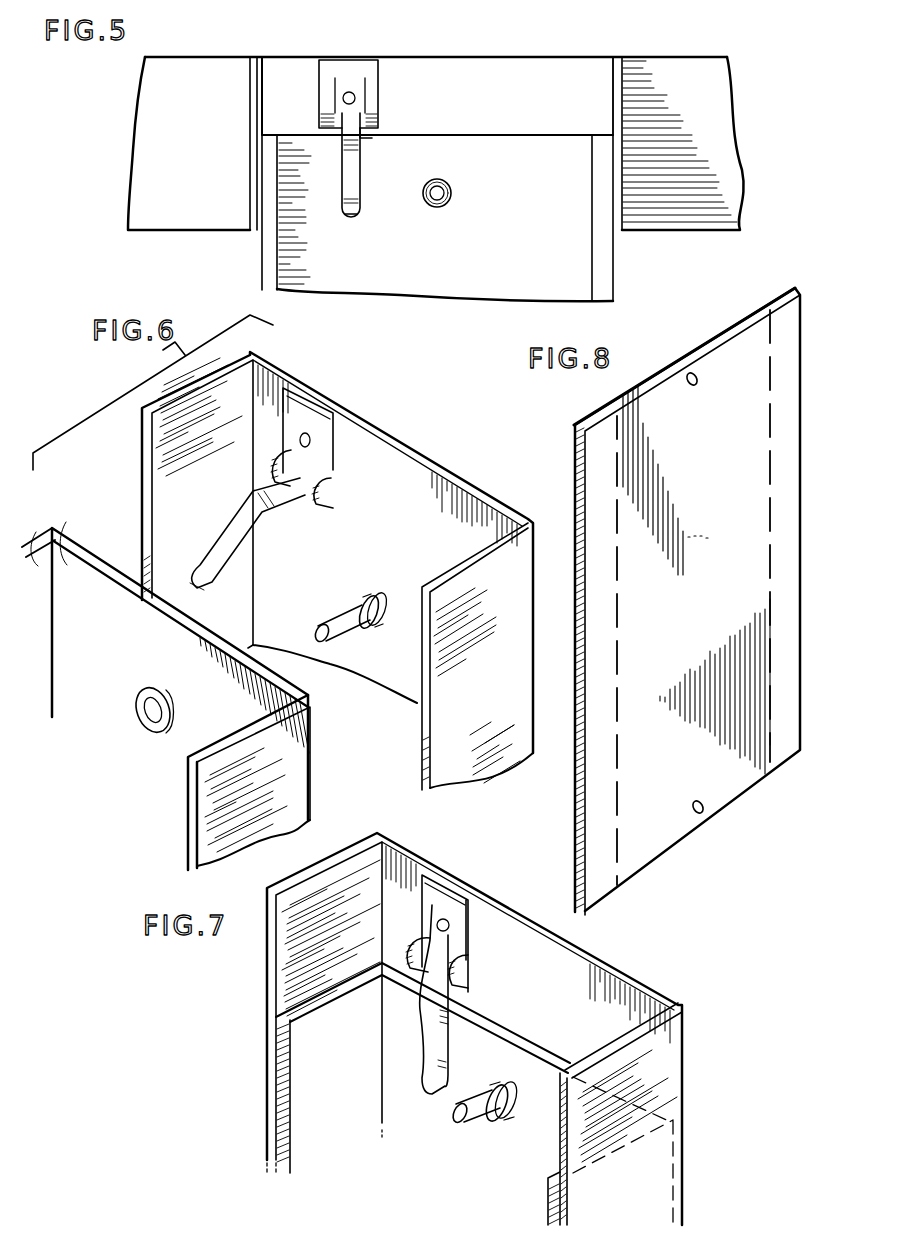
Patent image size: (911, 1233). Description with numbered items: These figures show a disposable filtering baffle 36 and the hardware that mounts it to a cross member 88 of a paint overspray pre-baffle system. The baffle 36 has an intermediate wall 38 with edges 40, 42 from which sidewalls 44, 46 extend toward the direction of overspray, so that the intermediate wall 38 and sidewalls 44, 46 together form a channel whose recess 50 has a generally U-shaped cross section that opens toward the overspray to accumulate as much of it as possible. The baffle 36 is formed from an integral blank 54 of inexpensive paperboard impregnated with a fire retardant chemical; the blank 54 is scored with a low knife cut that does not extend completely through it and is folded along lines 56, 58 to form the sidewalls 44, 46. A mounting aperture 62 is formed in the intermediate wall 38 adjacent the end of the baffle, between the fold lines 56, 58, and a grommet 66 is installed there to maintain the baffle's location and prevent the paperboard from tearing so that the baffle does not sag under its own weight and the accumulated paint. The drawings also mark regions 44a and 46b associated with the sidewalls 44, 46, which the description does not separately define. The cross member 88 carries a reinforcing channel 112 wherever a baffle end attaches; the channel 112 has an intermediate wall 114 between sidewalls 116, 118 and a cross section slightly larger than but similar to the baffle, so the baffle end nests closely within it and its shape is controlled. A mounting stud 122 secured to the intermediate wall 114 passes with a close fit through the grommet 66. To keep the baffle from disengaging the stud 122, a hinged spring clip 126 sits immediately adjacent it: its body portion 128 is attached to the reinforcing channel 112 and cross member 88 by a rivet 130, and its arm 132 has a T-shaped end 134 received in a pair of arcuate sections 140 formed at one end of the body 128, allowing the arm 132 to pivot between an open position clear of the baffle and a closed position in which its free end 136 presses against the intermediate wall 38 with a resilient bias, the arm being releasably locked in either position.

In FIG. 5, the disposable filtering baffle 36 is at (390, 300).
In FIG. 6, the disposable filtering baffle 36 is at (310, 808).
In FIG. 7, the disposable filtering baffle 36 is at (268, 1097).
In FIG. 5, the intermediate wall 38 is at (462, 136).
In FIG. 6, the intermediate wall 38 is at (102, 603).
In FIG. 8, the intermediate wall 38 is at (738, 792).
In FIG. 7, the intermediate wall 38 is at (535, 1072).
In FIG. 6, the edge 40 is at (57, 536).
In FIG. 6, the edge 42 is at (312, 778).
In FIG. 5, the sidewall 44 is at (284, 196).
In FIG. 6, the sidewall 44 is at (52, 668).
In FIG. 8, the sidewall 44 is at (782, 334).
In FIG. 7, the sidewall 44 is at (276, 1042).
In FIG. 6, the flange edge 44a is at (78, 503).
In FIG. 7, the flange edge 44a is at (355, 1102).
In FIG. 5, the sidewall 46 is at (600, 196).
In FIG. 6, the sidewall 46 is at (186, 778).
In FIG. 8, the sidewall 46 is at (600, 445).
In FIG. 7, the sidewall 46 is at (548, 1190).
In FIG. 6, the flange edge portion 46b is at (302, 748).
In FIG. 6, the channel recess 50 is at (180, 802).
In FIG. 7, the channel recess 50 is at (552, 1138).
In FIG. 8, the blank 54 is at (790, 495).
In FIG. 8, the fold line 56 is at (622, 626).
In FIG. 8, the fold line 58 is at (770, 425).
In FIG. 8, the mounting aperture 62 is at (690, 374).
In FIG. 5, the grommet 66 is at (452, 197).
In FIG. 6, the grommet 66 is at (136, 725).
In FIG. 7, the grommet 66 is at (504, 1088).
In FIG. 5, the cross member 88 is at (217, 73).
In FIG. 5, the reinforcing channel 112 is at (452, 58).
In FIG. 6, the reinforcing channel 112 is at (478, 468).
In FIG. 7, the reinforcing channel 112 is at (508, 900).
In FIG. 5, the intermediate wall 114 is at (580, 85).
In FIG. 6, the intermediate wall 114 is at (402, 445).
In FIG. 7, the intermediate wall 114 is at (608, 985).
In FIG. 5, the sidewall 116 is at (252, 122).
In FIG. 6, the sidewall 116 is at (142, 457).
In FIG. 7, the sidewall 116 is at (302, 900).
In FIG. 5, the sidewall 118 is at (628, 106).
In FIG. 6, the sidewall 118 is at (517, 520).
In FIG. 7, the sidewall 118 is at (682, 1046).
In FIG. 5, the mounting stud 122 is at (449, 183).
In FIG. 6, the mounting stud 122 is at (330, 615).
In FIG. 7, the mounting stud 122 is at (478, 1130).
In FIG. 5, the hinged spring clip 126 is at (318, 84).
In FIG. 6, the hinged spring clip 126 is at (286, 420).
In FIG. 7, the hinged spring clip 126 is at (470, 908).
In FIG. 5, the body portion 128 is at (356, 68).
In FIG. 6, the body portion 128 is at (300, 400).
In FIG. 7, the body portion 128 is at (432, 875).
In FIG. 5, the rivet 130 is at (357, 98).
In FIG. 6, the rivet 130 is at (312, 430).
In FIG. 7, the rivet 130 is at (451, 927).
In FIG. 5, the arm 132 is at (361, 172).
In FIG. 6, the arm 132 is at (236, 550).
In FIG. 7, the arm 132 is at (432, 1024).
In FIG. 5, the T-shaped end 134 is at (366, 136).
In FIG. 6, the T-shaped end 134 is at (294, 500).
In FIG. 7, the T-shaped end 134 is at (412, 990).
In FIG. 5, the free end 136 is at (358, 216).
In FIG. 6, the free end 136 is at (210, 585).
In FIG. 7, the free end 136 is at (420, 1066).
In FIG. 5, the arcuate sections 140 is at (326, 118).
In FIG. 6, the arcuate sections 140 is at (272, 465).
In FIG. 7, the arcuate sections 140 is at (396, 962).